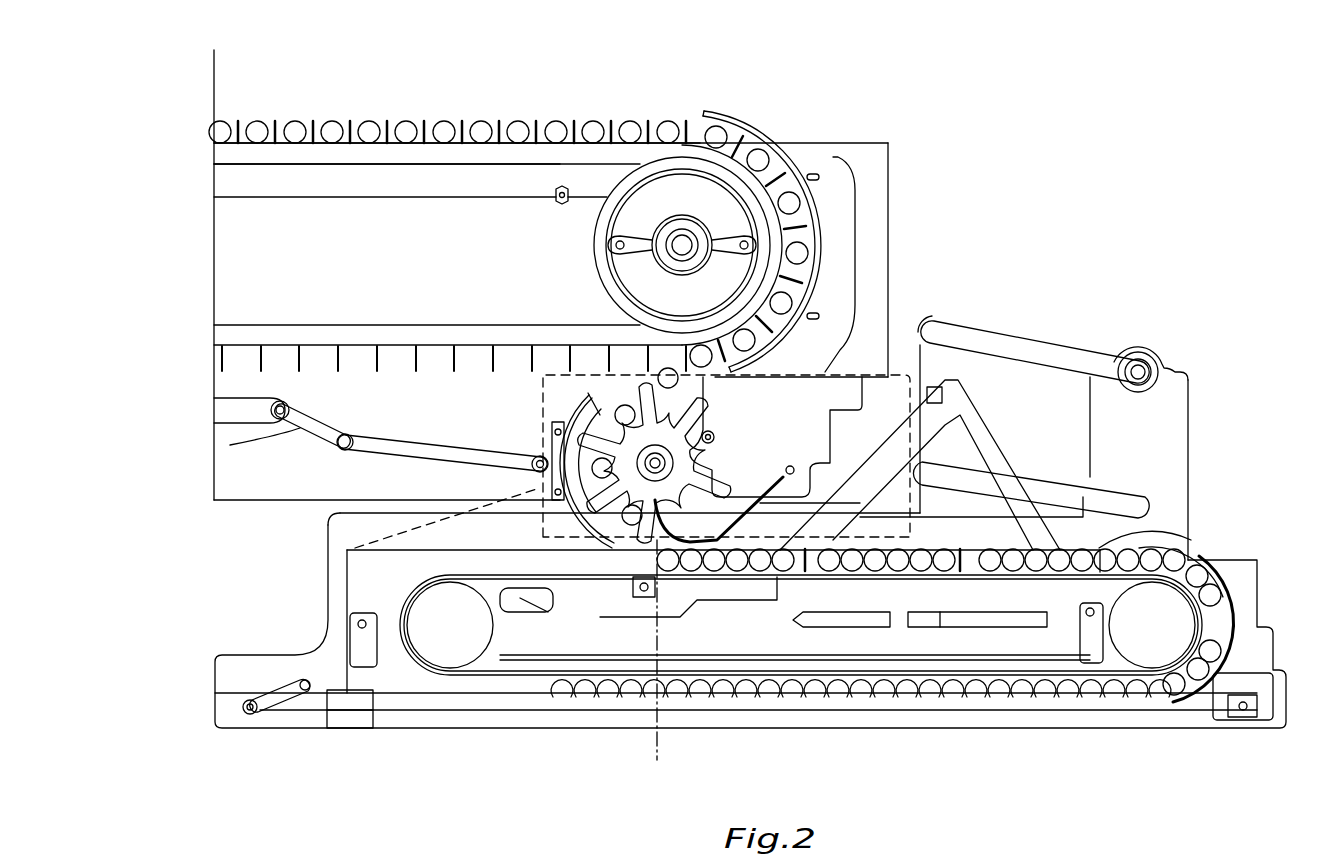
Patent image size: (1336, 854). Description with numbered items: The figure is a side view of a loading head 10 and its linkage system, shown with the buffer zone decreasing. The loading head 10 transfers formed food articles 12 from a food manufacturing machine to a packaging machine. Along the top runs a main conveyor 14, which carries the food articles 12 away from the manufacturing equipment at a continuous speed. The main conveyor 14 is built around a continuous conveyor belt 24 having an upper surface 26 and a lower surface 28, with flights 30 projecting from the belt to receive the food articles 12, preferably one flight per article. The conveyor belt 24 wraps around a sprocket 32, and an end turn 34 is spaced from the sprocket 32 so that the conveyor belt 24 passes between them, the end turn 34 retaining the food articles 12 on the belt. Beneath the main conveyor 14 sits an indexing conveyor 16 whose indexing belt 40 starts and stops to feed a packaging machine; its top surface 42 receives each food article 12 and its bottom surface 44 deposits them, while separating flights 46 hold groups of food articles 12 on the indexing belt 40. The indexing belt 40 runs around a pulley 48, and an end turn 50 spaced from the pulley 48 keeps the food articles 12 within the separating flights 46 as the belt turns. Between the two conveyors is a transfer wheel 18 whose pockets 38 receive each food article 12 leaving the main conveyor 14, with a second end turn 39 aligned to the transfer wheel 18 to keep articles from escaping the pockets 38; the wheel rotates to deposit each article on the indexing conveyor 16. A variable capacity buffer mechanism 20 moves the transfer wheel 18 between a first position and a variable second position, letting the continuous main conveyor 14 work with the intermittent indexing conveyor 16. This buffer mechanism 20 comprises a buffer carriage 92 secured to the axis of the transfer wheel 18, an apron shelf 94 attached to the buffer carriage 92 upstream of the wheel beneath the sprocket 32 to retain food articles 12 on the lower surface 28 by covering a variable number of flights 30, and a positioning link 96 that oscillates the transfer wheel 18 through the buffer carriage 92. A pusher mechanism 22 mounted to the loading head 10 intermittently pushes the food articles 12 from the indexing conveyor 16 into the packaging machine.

The loading head 10 is at (928, 121).
The food articles 12 is at (437, 120).
The main conveyor 14 is at (252, 257).
The indexing conveyor 16 is at (1225, 585).
The transfer wheel 18 is at (588, 397).
The variable capacity buffer mechanism 20 is at (280, 425).
The pusher mechanism 22 is at (1030, 335).
The conveyor belt 24 is at (218, 148).
The upper surface 26 is at (240, 120).
The lower surface 28 is at (240, 350).
The flights 30 is at (340, 120).
The sprocket 32 is at (622, 192).
The end turn 34 is at (728, 118).
The pockets 38 is at (650, 385).
The second end turn 39 is at (588, 510).
The indexing belt 40 is at (893, 580).
The top surface 42 is at (967, 562).
The bottom surface 44 is at (830, 690).
The separating flights 46 is at (1105, 548).
The pulley 48 is at (1140, 560).
The end turn 50 is at (1235, 602).
The buffer carriage 92 is at (355, 548).
The apron shelf 94 is at (800, 398).
The positioning link 96 is at (315, 440).